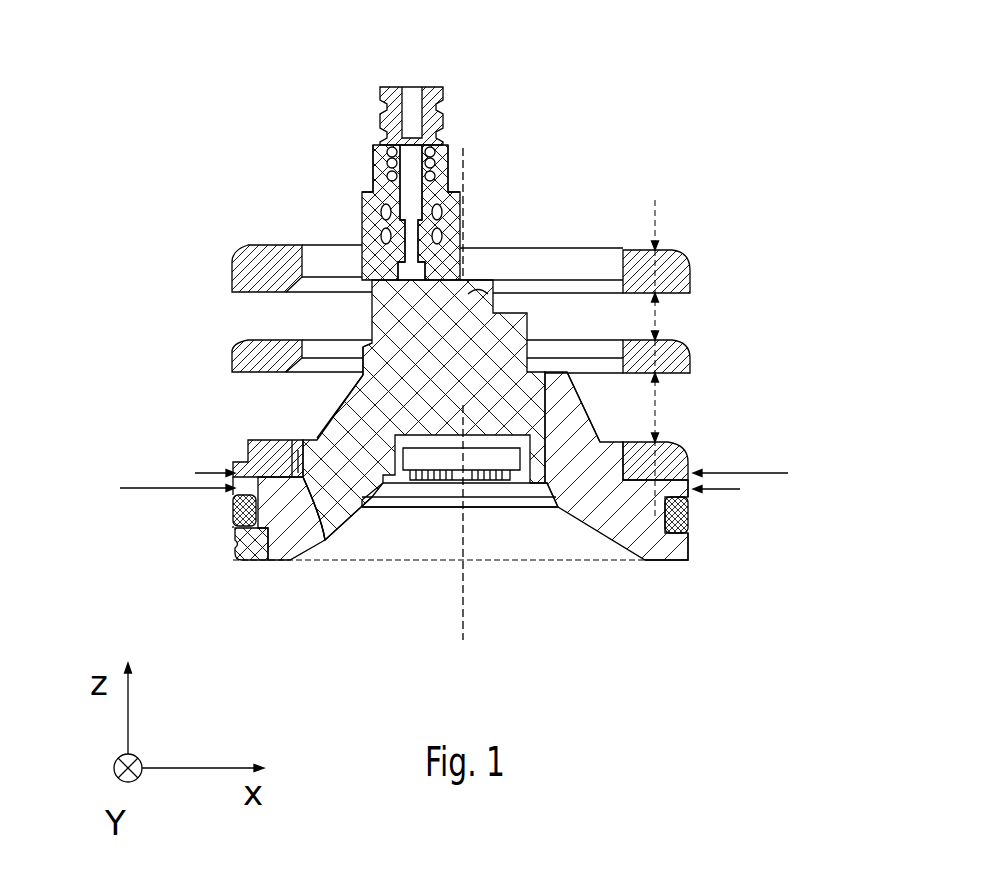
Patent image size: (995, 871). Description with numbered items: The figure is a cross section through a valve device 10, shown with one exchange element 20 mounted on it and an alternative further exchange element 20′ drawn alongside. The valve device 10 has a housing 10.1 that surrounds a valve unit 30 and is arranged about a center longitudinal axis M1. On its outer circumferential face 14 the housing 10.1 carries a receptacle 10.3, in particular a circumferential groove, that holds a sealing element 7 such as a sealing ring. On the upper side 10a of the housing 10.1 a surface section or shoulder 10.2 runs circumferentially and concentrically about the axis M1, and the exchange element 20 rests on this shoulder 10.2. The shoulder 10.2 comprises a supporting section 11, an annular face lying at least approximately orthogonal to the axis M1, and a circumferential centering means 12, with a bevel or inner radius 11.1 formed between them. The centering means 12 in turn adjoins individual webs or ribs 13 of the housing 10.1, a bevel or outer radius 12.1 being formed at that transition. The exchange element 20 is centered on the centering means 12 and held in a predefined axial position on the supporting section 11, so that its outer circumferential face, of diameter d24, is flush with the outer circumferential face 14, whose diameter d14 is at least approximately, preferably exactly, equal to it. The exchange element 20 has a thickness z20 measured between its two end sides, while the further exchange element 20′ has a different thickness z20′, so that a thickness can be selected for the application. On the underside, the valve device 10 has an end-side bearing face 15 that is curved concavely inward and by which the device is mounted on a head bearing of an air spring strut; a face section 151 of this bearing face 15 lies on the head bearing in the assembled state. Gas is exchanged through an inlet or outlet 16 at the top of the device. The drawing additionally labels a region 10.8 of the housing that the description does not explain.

The sealing element 7 is at (233, 512).
The valve device 10 is at (516, 104).
The housing 10.1 is at (597, 517).
The surface section or shoulder 10.2 is at (627, 483).
The receptacle 10.3 is at (270, 530).
The curved wall section 10.8 is at (297, 545).
The upper side 10a is at (303, 412).
The supporting section 11 is at (250, 460).
The bevel or inner radius 11.1 is at (325, 540).
The centering means 12 is at (285, 458).
The bevel or outer radius 12.1 is at (296, 450).
The webs or ribs 13 is at (362, 414).
The outer circumferential face 14 is at (695, 505).
The end-side bearing face 15 is at (566, 512).
The face section 151 is at (333, 519).
The inlet or outlet 16 is at (357, 133).
The exchange element 20 is at (688, 440).
The further exchange element 20′ is at (683, 333).
The valve unit 30 is at (510, 516).
The center longitudinal axis M1 is at (460, 618).
The diameter of the outer circumferential face d14 is at (177, 468).
The diameter of the outer circumferential face of the exchange element d24 is at (740, 463).
The thickness of the exchange element z20 is at (655, 377).
The thickness of the further exchange element z20′ is at (655, 442).